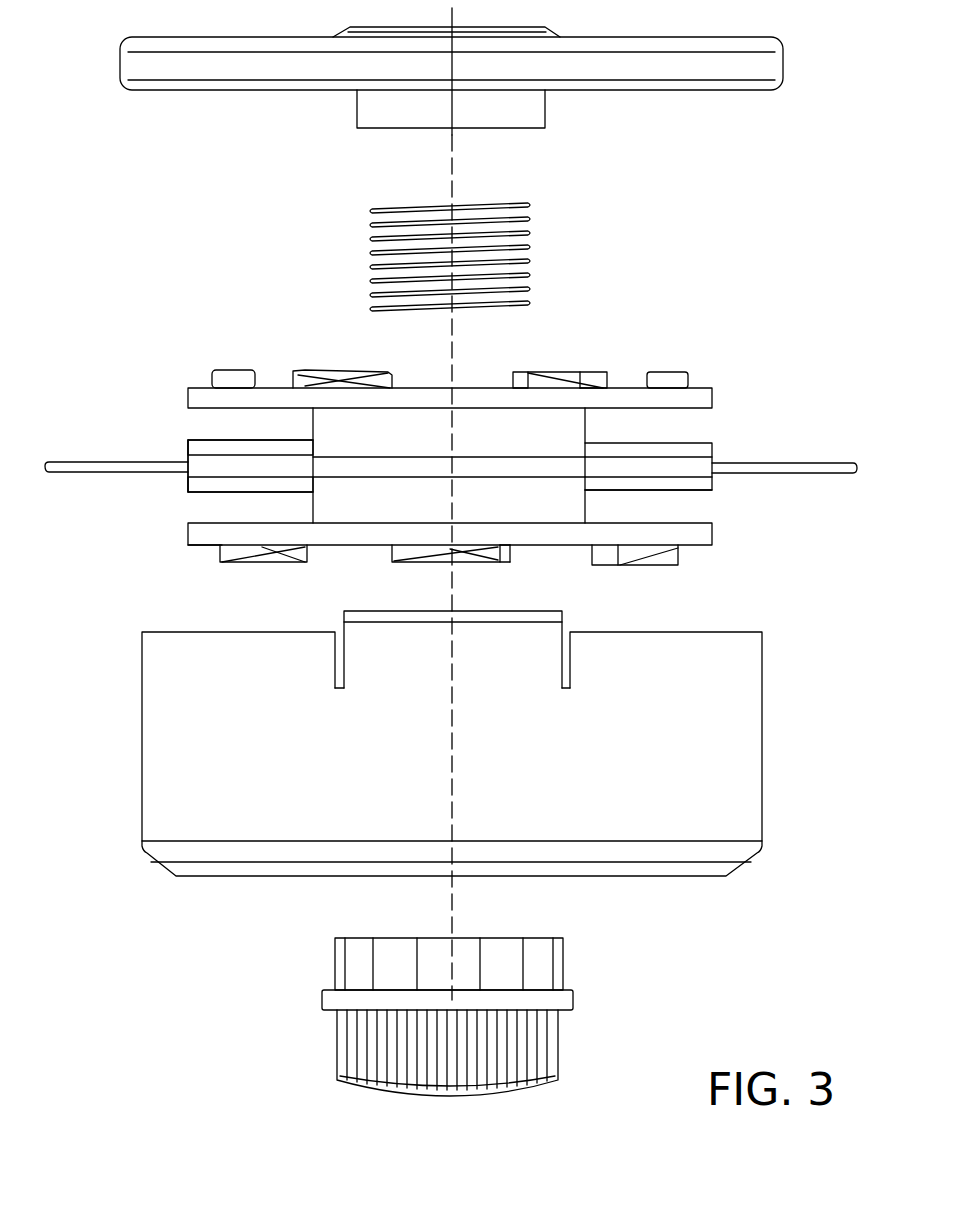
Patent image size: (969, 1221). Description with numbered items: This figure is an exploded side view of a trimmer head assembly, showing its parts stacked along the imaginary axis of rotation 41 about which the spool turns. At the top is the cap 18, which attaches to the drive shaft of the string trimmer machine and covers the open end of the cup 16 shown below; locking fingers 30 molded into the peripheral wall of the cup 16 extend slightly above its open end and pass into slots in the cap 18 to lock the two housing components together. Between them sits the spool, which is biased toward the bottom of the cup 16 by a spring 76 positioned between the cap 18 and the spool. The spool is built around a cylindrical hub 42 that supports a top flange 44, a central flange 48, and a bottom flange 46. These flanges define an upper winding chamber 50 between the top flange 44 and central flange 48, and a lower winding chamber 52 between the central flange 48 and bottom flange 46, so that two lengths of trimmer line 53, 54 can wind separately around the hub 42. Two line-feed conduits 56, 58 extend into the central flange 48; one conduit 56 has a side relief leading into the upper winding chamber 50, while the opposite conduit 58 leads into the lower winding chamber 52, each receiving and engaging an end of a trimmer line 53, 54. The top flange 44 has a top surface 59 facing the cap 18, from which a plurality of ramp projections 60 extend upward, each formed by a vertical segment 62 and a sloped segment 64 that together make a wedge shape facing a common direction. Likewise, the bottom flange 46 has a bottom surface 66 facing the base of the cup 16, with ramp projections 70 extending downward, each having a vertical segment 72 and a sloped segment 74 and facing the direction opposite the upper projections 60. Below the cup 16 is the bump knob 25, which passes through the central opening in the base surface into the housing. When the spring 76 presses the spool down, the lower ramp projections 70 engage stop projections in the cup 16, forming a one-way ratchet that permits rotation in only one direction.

The cup 16 is at (762, 740).
The cap 18 is at (788, 67).
The bump knob 25 is at (575, 999).
The locking fingers 30 is at (565, 612).
The axis of rotation 41 is at (448, 160).
The cylindrical hub 42 is at (568, 425).
The top flange 44 is at (705, 394).
The bottom flange 46 is at (712, 537).
The central flange 48 is at (716, 448).
The upper winding chamber 50 is at (197, 424).
The lower winding chamber 52 is at (192, 505).
The trimmer line 53 is at (76, 472).
The trimmer line 54 is at (832, 462).
The line-feed conduit 56 is at (190, 455).
The line-feed conduit 58 is at (692, 479).
The top surface 59 is at (196, 387).
The ramp projections 60 is at (540, 373).
The vertical segment 62 is at (287, 382).
The sloped segment 64 is at (324, 380).
The bottom surface 66 is at (202, 548).
The ramp projections 70 is at (287, 562).
The vertical segment 72 is at (390, 559).
The sloped segment 74 is at (424, 562).
The spring 76 is at (529, 238).